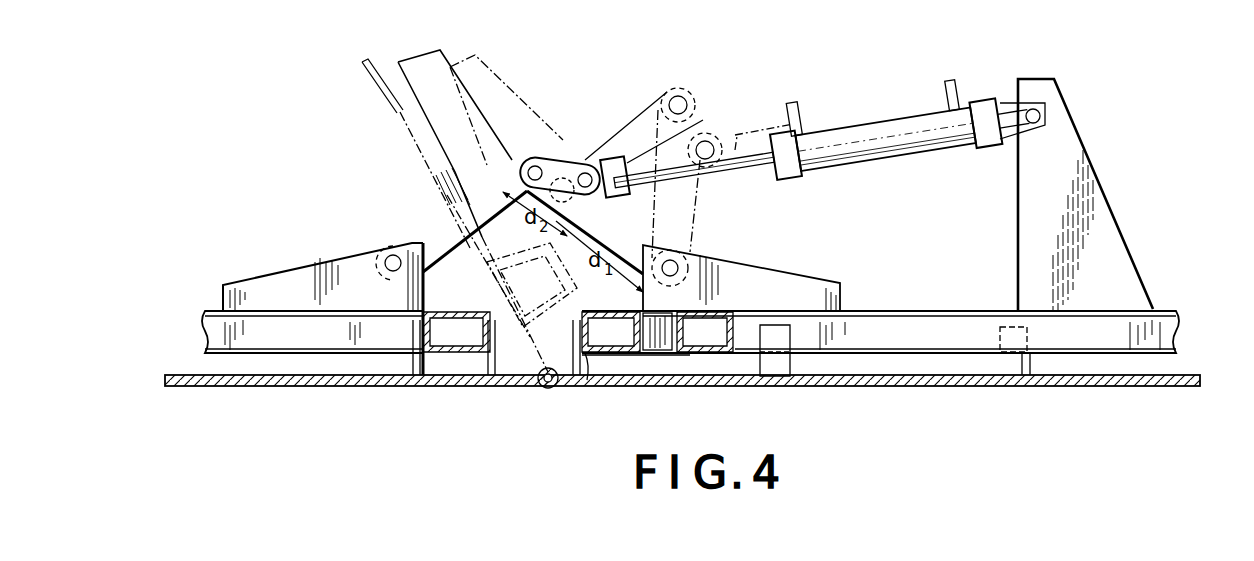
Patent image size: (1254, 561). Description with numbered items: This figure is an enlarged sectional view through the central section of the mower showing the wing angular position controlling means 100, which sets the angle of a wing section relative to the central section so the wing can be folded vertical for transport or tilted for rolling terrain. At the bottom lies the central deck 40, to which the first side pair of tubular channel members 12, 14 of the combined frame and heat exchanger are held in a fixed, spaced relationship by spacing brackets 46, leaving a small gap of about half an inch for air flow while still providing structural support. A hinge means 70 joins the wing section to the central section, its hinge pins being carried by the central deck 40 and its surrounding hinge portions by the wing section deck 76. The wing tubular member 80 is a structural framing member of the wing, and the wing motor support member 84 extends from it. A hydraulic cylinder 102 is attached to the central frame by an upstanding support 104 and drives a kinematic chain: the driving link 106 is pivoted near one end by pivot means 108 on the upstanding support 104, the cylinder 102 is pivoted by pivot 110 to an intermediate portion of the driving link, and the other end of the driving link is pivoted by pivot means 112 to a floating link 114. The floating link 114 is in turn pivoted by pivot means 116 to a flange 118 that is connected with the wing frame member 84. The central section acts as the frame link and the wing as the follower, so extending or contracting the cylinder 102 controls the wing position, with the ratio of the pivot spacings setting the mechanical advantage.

The tubular channel member 12 is at (603, 355).
The tubular channel member 14 is at (688, 356).
The deck 40 is at (908, 387).
The spacing bracket 46 is at (585, 353).
The hinge means 70 is at (541, 389).
The wing section deck 76 is at (394, 117).
The wing tubular member 80 is at (447, 312).
The wing motor support member 84 is at (425, 66).
The wing angular position controlling means 100 is at (816, 134).
The hydraulic cylinder 102 is at (835, 117).
The upright post 104 is at (1100, 222).
The driving link 106 is at (707, 125).
The pivot means 108 is at (700, 262).
The pivot 110 is at (587, 172).
The pivot means 112 is at (535, 166).
The floating link 114 is at (645, 110).
The pivot means 116 is at (390, 257).
The flange 118 is at (490, 66).